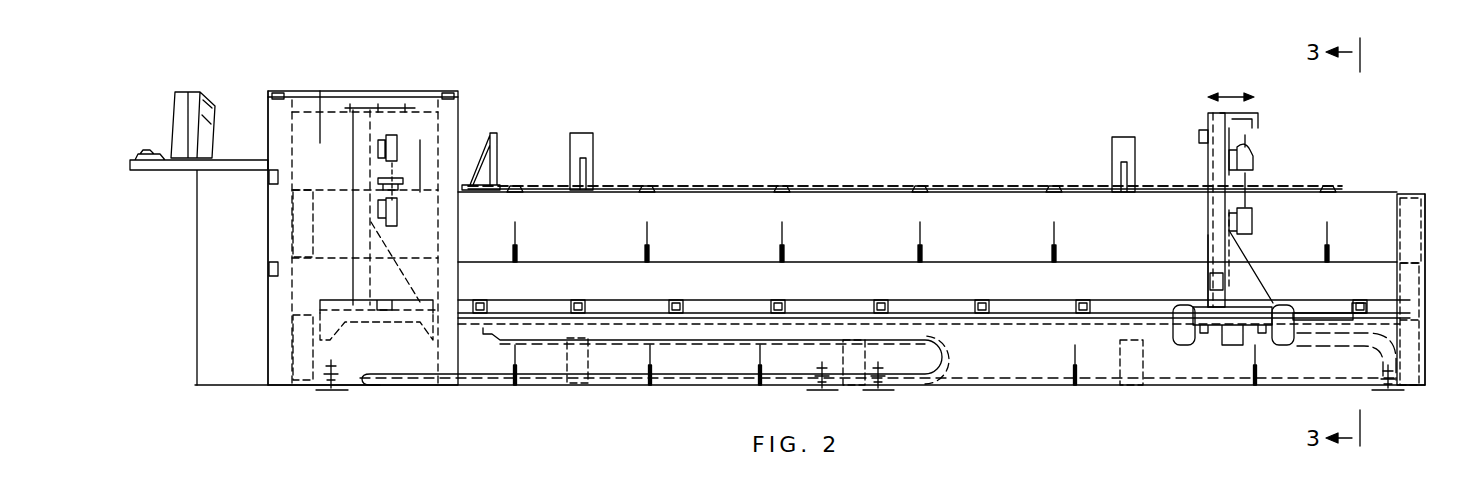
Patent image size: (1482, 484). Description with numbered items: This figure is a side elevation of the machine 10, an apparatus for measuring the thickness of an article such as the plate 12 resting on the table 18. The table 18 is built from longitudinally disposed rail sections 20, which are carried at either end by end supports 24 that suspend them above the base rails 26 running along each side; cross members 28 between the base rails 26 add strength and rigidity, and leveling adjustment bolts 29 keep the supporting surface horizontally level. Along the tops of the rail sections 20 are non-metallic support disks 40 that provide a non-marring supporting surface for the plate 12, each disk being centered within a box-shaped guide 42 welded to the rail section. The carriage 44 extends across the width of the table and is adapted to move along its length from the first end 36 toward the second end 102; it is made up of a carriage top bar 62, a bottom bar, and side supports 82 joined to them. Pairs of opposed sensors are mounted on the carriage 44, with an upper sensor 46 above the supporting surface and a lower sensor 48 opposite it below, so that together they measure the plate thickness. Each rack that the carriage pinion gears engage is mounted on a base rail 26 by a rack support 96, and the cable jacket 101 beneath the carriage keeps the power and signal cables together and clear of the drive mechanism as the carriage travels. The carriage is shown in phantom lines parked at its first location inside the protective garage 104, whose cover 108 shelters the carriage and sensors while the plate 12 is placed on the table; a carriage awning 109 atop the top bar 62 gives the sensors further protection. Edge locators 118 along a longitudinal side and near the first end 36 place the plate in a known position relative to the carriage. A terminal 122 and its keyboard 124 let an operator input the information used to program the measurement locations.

The machine 10 is at (971, 98).
The plate 12 is at (870, 186).
The table 18 is at (1401, 194).
The rail sections 20 is at (873, 234).
The end supports 24 is at (305, 190).
The base rails 26 is at (1035, 372).
The cross members 28 is at (590, 358).
The leveling adjustment bolts 29 is at (336, 364).
The first end 36 is at (267, 323).
The support disks 40 is at (782, 188).
The guides 42 is at (782, 193).
The carriage 44 is at (378, 108).
The upper sensor 46 is at (1255, 160).
The lower sensor 48 is at (1256, 220).
The carriage top bar 62 is at (1207, 132).
The side supports 82 is at (1208, 232).
The rack support 96 is at (676, 300).
The cable jacket 101 is at (960, 357).
The second end 102 is at (1425, 245).
The protective garage 104 is at (307, 90).
The cover 108 is at (432, 92).
The carriage awning 109 is at (1258, 118).
The edge locators 118 is at (498, 133).
The terminal 122 is at (186, 90).
The keyboard 124 is at (150, 155).